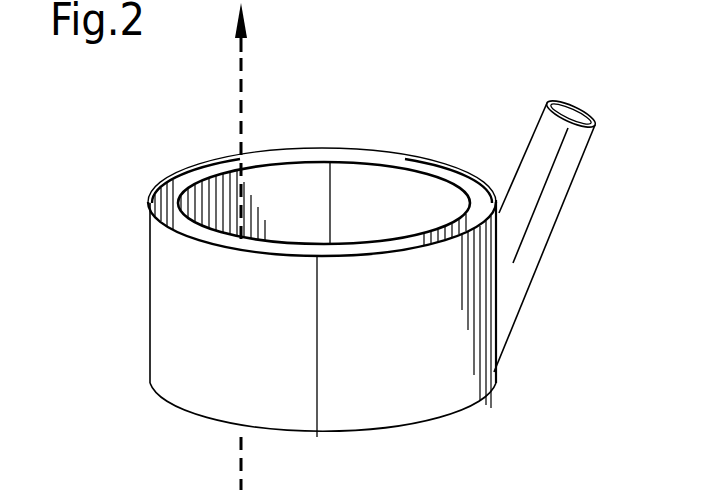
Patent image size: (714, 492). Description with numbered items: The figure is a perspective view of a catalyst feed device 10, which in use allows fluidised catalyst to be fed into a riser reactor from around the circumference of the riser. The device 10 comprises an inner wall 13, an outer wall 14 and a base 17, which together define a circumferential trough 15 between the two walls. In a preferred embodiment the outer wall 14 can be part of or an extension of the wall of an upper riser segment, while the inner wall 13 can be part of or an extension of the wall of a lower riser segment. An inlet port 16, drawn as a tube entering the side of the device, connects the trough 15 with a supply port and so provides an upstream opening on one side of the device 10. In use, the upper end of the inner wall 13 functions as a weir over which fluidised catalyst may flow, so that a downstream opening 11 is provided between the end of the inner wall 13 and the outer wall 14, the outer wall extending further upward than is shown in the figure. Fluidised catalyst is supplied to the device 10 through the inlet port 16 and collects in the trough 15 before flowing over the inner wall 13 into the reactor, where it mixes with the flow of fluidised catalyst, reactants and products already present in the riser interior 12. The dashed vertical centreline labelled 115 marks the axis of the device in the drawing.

The catalyst feed device 10 is at (317, 78).
The downstream opening 11 is at (207, 165).
The riser interior 12 is at (373, 192).
The inner wall 13 is at (190, 237).
The outer wall 14 is at (165, 337).
The circumferential trough 15 is at (392, 245).
The inlet port 16 is at (577, 112).
The base 17 is at (412, 408).
The axis 115 is at (270, 56).